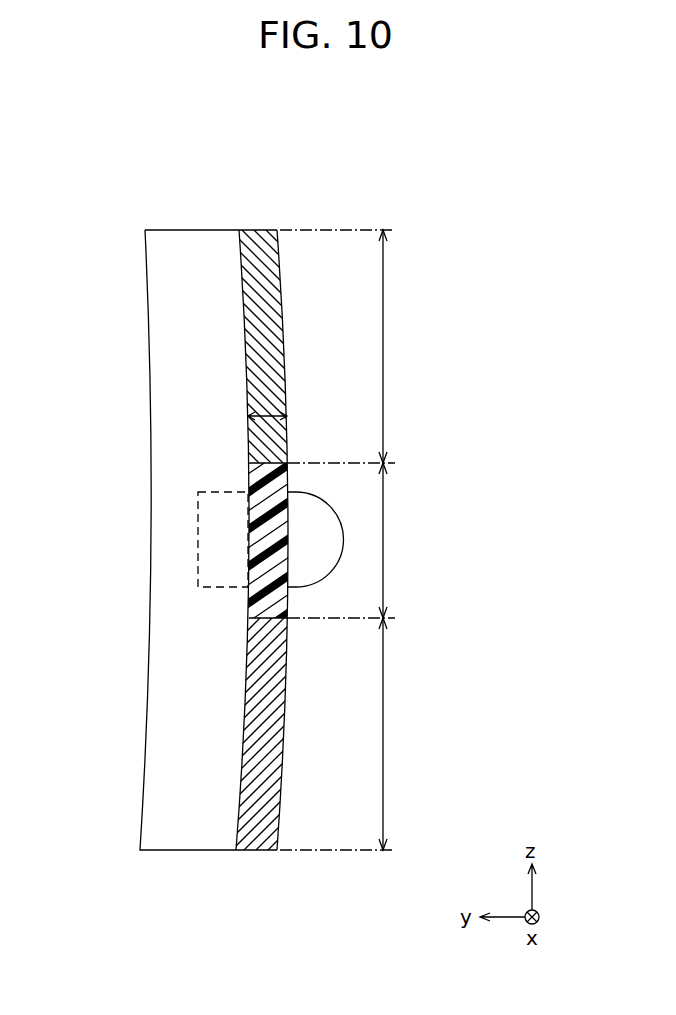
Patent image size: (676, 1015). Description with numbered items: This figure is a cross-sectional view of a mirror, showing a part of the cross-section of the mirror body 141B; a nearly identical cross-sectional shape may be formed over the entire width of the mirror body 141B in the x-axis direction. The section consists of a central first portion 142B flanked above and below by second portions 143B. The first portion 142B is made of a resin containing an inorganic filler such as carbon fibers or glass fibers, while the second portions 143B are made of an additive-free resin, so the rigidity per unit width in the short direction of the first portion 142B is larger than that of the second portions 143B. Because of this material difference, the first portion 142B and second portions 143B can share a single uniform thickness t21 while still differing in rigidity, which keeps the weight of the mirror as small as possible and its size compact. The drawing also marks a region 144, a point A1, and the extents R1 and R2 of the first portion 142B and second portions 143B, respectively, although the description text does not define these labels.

The mirror body 141B is at (148, 263).
The second portions 143B is at (247, 332).
The first portion 142B is at (250, 600).
The enlarged detail region 144 is at (232, 535).
The point A1 is at (240, 420).
The thickness t21 is at (268, 414).
The region R1 is at (356, 540).
The region R2 is at (352, 540).